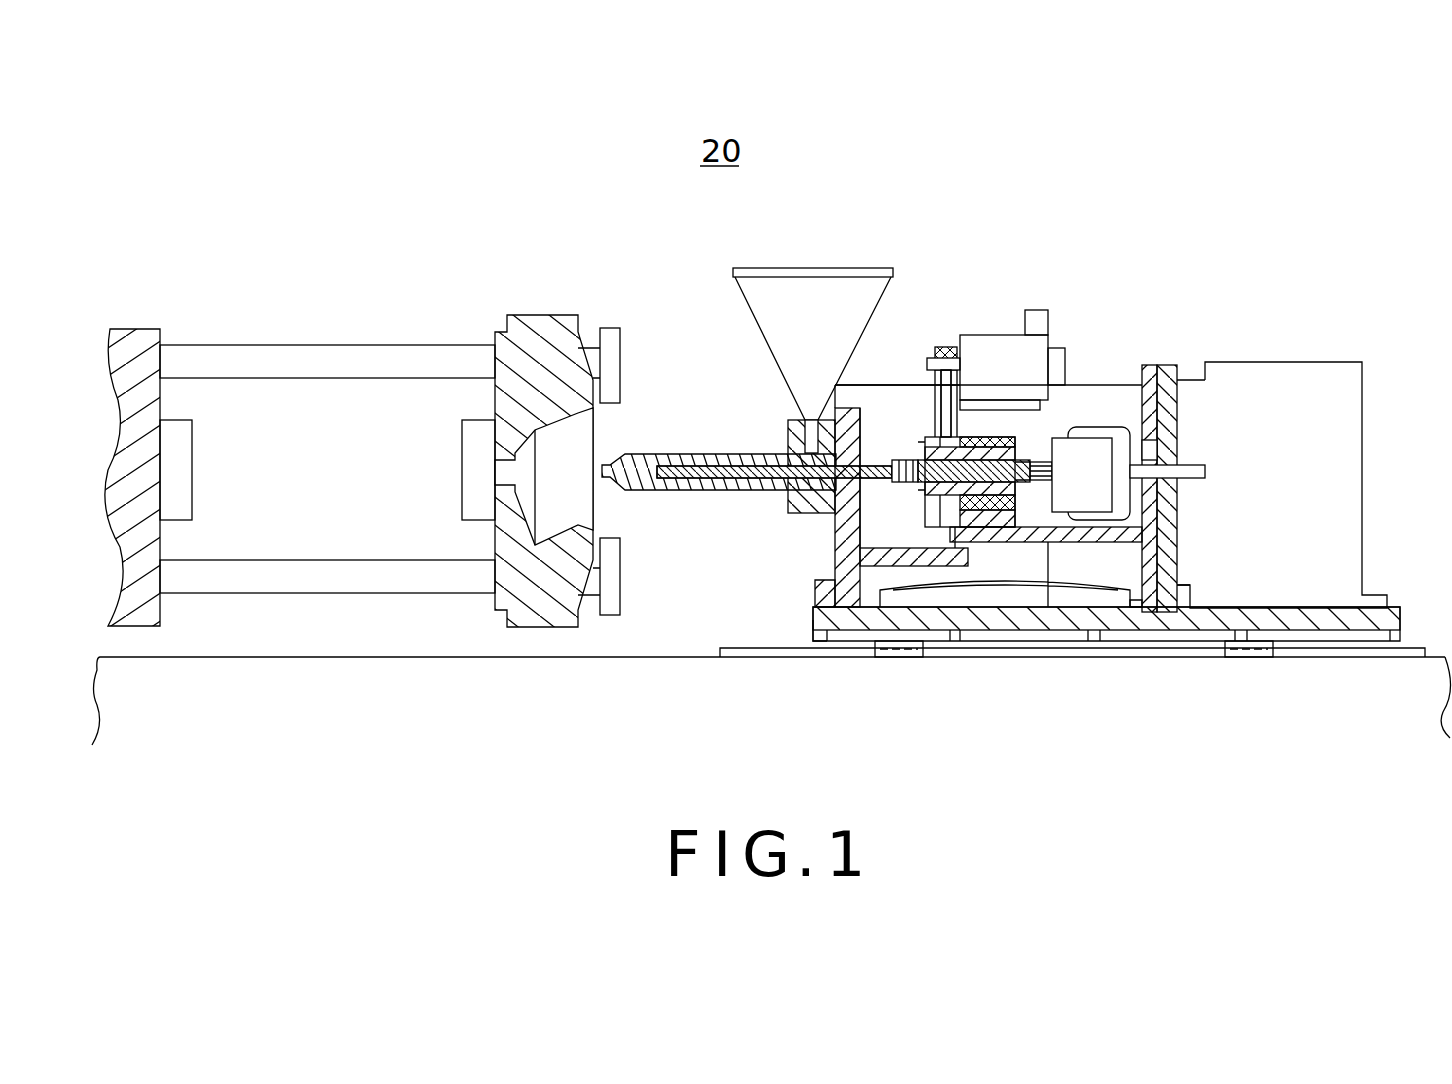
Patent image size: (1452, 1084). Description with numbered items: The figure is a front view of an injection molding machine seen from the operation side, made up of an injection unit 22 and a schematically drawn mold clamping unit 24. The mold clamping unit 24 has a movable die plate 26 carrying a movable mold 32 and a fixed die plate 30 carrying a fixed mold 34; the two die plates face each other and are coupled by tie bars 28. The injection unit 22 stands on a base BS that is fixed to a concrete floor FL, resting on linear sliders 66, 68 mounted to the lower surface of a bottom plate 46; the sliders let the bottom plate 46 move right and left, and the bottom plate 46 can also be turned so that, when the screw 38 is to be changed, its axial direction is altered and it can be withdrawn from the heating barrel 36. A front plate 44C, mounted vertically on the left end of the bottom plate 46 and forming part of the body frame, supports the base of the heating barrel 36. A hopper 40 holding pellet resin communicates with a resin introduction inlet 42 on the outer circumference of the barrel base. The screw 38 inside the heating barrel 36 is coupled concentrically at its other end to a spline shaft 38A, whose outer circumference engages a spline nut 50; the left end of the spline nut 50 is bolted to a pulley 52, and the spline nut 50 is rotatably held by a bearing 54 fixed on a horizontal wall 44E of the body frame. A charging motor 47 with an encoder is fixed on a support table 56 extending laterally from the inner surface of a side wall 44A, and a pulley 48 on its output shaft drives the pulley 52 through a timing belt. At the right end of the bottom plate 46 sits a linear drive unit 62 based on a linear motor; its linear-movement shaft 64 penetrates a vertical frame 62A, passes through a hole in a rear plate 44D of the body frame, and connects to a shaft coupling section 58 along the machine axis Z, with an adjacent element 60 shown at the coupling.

The injection unit 22 is at (1111, 276).
The mold clamping unit 24 is at (345, 312).
The movable die plate 26 is at (136, 345).
The tie bars 28 is at (250, 358).
The fixed die plate 30 is at (545, 315).
The movable mold 32 is at (197, 440).
The fixed mold 34 is at (460, 466).
The heating barrel 36 is at (683, 492).
The screw 38 is at (692, 460).
The spline shaft 38A is at (908, 462).
The hopper 40 is at (810, 270).
The resin introduction inlet 42 is at (790, 440).
The side wall 44A is at (1148, 376).
The front plate 44C is at (832, 527).
The rear plate 44D is at (1152, 595).
The horizontal wall 44E is at (1048, 588).
The bottom plate 46 is at (854, 622).
The charging motor 47 is at (975, 335).
The pulley 48 is at (936, 350).
The spline nut 50 is at (932, 488).
The pulley 52 is at (955, 527).
The bearing 54 is at (1038, 456).
The support table 56 is at (1032, 406).
The shaft coupling section 58 is at (1092, 512).
The nut holder 60 is at (1117, 490).
The linear drive unit 62 is at (1318, 362).
The vertical frame 62A is at (1180, 362).
The linear-movement shaft 64 is at (1190, 473).
The linear slider 66 is at (1258, 658).
The linear slider 68 is at (900, 658).
The axis direction Z is at (1108, 397).
The concrete floor FL is at (664, 644).
The base BS is at (750, 635).